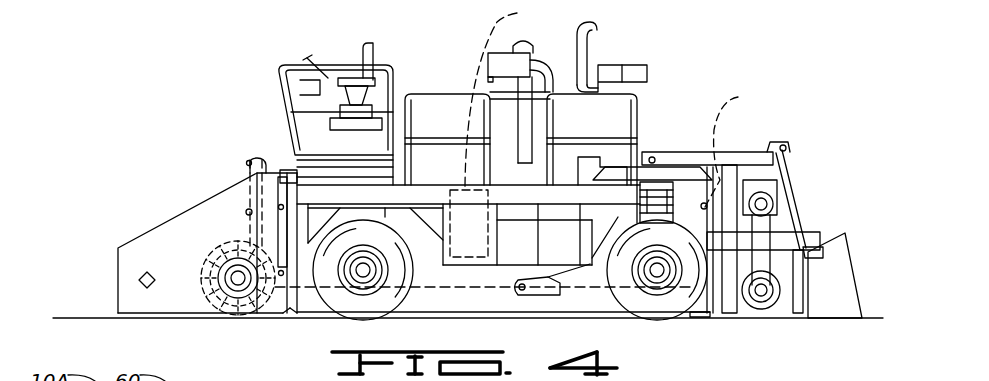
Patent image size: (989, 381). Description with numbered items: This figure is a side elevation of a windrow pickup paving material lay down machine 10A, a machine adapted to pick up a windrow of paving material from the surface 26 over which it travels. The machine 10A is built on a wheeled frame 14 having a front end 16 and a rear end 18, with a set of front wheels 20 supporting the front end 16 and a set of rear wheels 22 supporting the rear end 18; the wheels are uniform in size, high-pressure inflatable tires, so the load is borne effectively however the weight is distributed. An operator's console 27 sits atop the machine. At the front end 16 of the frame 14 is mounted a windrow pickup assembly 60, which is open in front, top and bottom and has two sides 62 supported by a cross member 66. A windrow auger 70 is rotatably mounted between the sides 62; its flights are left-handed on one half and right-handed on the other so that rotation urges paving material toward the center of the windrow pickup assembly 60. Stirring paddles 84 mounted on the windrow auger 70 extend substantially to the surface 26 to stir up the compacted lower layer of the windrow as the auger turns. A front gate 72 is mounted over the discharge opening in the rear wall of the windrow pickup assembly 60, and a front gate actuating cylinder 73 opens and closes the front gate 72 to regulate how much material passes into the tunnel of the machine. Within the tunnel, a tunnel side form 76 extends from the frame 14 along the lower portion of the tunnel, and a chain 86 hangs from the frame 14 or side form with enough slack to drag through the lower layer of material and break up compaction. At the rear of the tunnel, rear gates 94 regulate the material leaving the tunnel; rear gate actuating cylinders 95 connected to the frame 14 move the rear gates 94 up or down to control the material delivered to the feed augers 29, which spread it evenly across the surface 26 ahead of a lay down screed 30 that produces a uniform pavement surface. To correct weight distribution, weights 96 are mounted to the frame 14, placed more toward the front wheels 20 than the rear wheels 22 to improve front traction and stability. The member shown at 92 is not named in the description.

The paving material lay down machine 10A is at (207, 120).
The frame 14 is at (444, 188).
The front end 16 is at (288, 172).
The rear end 18 is at (712, 183).
The front wheels 20 is at (348, 305).
The rear wheels 22 is at (648, 308).
The surface 26 is at (95, 317).
The operator's console 27 is at (292, 77).
The feed augers 29 is at (768, 297).
The lay down screed 30 is at (827, 298).
The windrow pickup assembly 60 is at (167, 222).
The sides 62 is at (150, 252).
The cross member 66 is at (138, 275).
The windrow auger 70 is at (237, 280).
The front gate 72 is at (233, 182).
The front gate actuating cylinder 73 is at (245, 170).
The tunnel side form 76 is at (448, 296).
The stirring paddle 84 is at (233, 307).
The chain 86 is at (698, 317).
The lift strut 92 is at (803, 247).
The rear gates 94 is at (731, 146).
The rear gate actuating cylinders 95 is at (708, 180).
The weights 96 is at (505, 95).